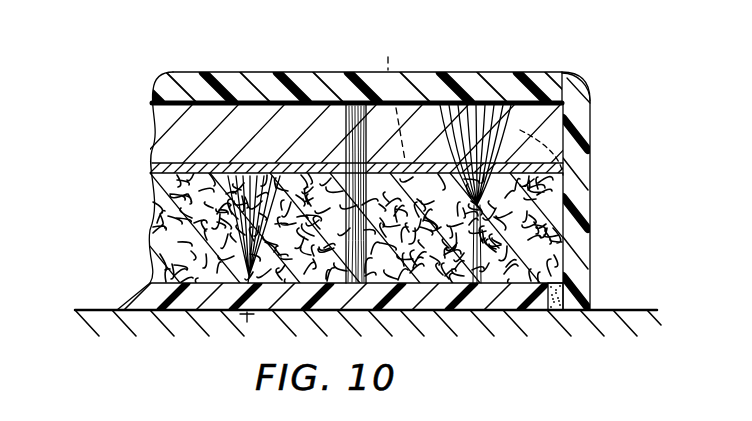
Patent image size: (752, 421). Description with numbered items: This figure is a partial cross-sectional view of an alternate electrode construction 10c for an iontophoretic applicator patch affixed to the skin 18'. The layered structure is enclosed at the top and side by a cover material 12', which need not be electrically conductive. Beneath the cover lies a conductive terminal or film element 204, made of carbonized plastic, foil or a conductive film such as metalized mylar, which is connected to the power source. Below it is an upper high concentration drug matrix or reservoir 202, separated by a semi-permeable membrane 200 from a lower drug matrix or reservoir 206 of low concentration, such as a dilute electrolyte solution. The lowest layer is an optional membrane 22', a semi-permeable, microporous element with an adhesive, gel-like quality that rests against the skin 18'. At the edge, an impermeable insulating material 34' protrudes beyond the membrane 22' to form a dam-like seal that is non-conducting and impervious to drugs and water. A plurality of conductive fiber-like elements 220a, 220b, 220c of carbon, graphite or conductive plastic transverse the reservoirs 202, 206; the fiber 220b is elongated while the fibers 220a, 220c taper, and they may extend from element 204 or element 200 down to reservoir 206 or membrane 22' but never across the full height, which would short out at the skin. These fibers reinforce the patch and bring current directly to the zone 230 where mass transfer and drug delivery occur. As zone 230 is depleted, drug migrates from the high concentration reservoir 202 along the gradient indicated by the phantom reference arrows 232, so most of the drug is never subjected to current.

The electrode 10c is at (607, 84).
The conductive terminal or film element 204 is at (531, 100).
The high concentration drug matrix or reservoir 202 is at (552, 122).
The semi-permeable membrane 200 is at (550, 164).
The cover material 12' is at (603, 206).
The reference arrows 232 is at (612, 236).
The conductive fiber-like element 220a is at (467, 107).
The conductive fiber-like element 220b is at (343, 138).
The conductive fiber-like element 220c is at (250, 215).
The drug matrix or reservoir 206 is at (543, 312).
The impermeable insulating material 34' is at (597, 294).
The membrane 22' is at (366, 347).
The skin 18' is at (396, 304).
The zone 230 is at (247, 322).